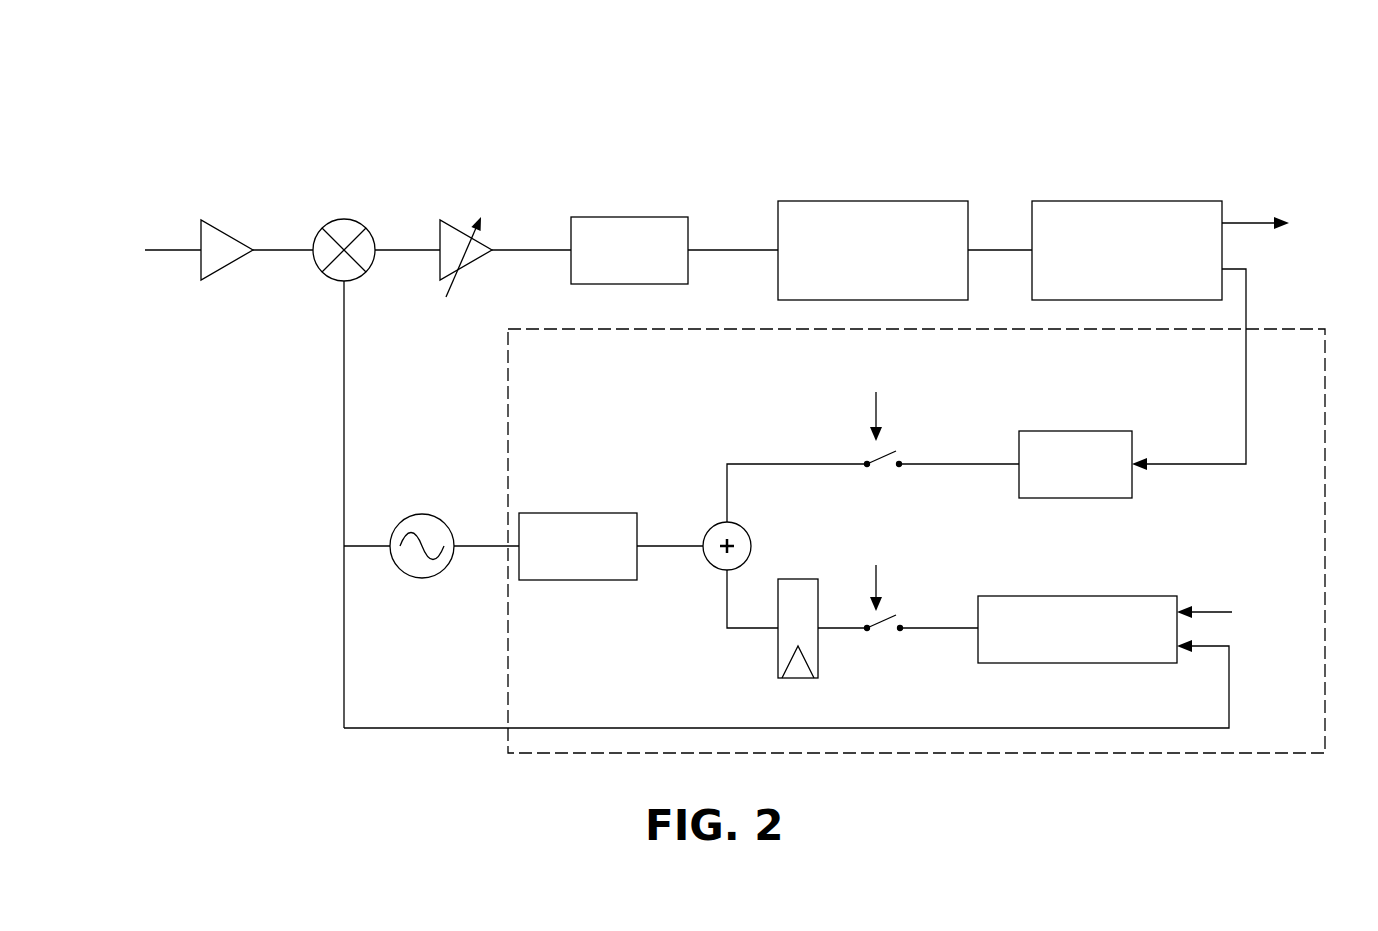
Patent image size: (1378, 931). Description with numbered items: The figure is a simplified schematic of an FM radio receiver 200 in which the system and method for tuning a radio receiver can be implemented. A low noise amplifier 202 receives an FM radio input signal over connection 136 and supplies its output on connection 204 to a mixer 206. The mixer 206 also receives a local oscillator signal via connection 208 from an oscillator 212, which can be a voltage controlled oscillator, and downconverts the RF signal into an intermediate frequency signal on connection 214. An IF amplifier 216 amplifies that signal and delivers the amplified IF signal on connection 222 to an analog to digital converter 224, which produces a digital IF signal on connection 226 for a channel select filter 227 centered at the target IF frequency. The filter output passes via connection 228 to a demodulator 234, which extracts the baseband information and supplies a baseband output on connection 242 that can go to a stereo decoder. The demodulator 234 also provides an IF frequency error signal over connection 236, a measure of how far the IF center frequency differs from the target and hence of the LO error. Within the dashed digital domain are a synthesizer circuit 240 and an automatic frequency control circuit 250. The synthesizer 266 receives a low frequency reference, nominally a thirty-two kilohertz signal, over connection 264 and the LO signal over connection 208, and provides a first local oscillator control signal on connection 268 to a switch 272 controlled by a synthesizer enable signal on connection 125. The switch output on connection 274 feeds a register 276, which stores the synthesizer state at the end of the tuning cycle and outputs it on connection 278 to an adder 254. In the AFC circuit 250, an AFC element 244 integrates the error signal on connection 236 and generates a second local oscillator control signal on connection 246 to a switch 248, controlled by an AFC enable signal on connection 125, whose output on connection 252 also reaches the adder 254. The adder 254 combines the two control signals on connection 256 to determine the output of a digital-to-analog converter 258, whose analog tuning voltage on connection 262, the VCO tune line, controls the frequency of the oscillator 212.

The FM radio receiver 200 is at (180, 77).
The connection 136 is at (181, 253).
The low noise amplifier 202 is at (218, 226).
The connection 204 is at (296, 254).
The mixer 206 is at (350, 222).
The connection 214 is at (432, 254).
The IF amplifier 216 is at (446, 222).
The connection 222 is at (545, 256).
The analog to digital converter 224 is at (617, 282).
The connection 226 is at (753, 252).
The channel select filter 227 is at (823, 299).
The connection 228 is at (1009, 252).
The demodulator 234 is at (1079, 295).
The connection 242 is at (1232, 222).
The connection 236 is at (1247, 382).
The automatic frequency control circuit 250 is at (1068, 369).
The AFC element 244 is at (1064, 495).
The connection 246 is at (938, 462).
The switch 248 is at (877, 479).
The connection 125 is at (875, 411).
The connection 252 is at (785, 462).
The adder 254 is at (752, 546).
The connection 256 is at (657, 545).
The digital-to-analog converter 258 is at (568, 575).
The connection 262 is at (495, 548).
The oscillator 212 is at (420, 513).
The connection 208 is at (357, 546).
The connection 278 is at (748, 631).
The register 276 is at (778, 650).
The connection 274 is at (844, 630).
The switch 272 is at (886, 647).
The connection 268 is at (915, 627).
The synthesizer 266 is at (1022, 658).
The connection 264 is at (1213, 611).
The synthesizer circuit 240 is at (1093, 557).